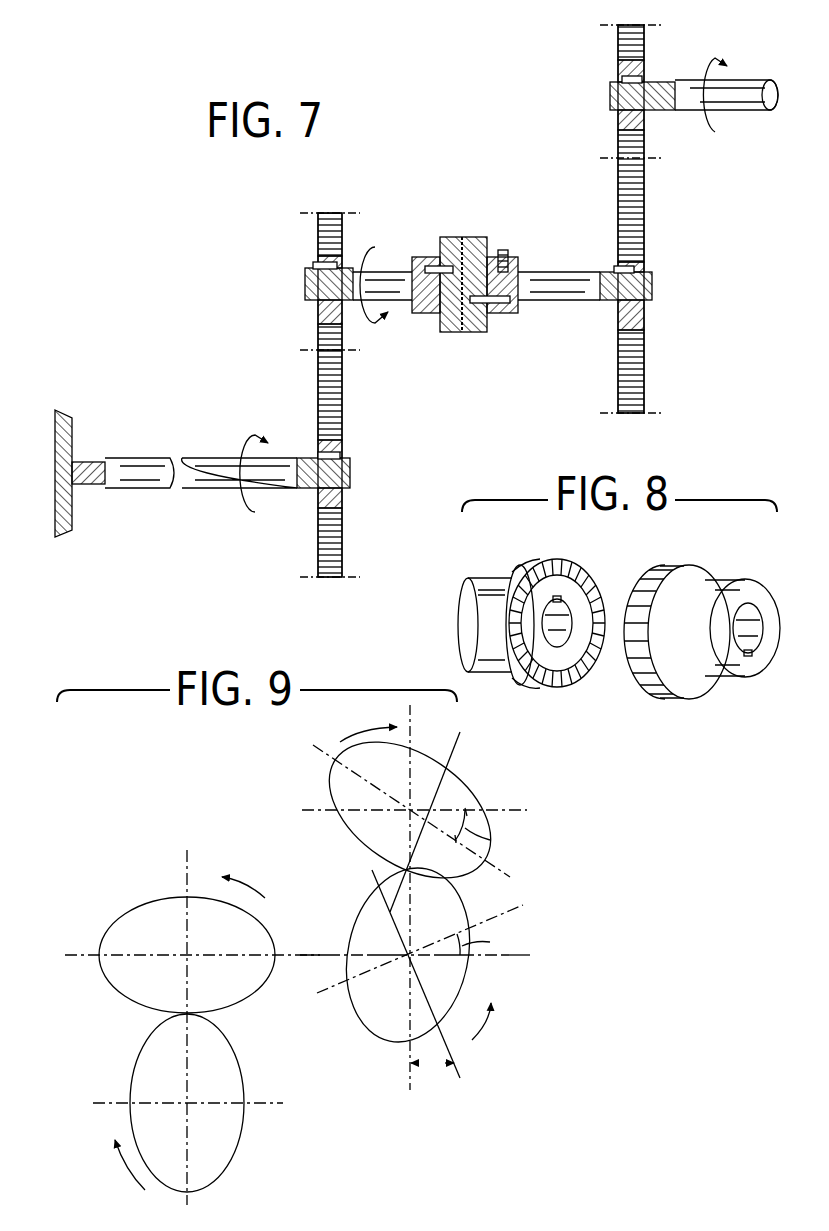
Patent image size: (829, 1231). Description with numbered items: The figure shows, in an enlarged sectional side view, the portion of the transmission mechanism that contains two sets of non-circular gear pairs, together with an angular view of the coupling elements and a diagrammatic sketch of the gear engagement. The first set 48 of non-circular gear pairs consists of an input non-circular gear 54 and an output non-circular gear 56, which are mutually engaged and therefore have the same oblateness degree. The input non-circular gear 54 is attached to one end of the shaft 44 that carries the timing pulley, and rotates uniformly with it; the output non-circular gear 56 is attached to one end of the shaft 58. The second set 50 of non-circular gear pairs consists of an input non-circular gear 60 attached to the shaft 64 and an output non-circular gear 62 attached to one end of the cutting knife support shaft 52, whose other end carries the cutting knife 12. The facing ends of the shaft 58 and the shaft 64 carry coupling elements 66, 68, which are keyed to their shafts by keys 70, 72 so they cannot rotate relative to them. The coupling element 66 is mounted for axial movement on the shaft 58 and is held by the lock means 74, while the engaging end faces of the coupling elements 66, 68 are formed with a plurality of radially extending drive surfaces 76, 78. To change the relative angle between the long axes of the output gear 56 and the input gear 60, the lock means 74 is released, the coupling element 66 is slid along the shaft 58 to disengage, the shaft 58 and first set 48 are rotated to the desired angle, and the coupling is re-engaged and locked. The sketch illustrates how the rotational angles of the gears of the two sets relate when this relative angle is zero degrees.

In FIG. 7, the cutting knife 12 is at (72, 440).
In FIG. 7, the shaft 44 is at (742, 96).
In FIG. 7, the first set of non-circular gear pairs 48 is at (610, 157).
In FIG. 9, the first set of non-circular gear pairs 48 is at (342, 854).
In FIG. 7, the second set of non-circular gear pairs 50 is at (362, 366).
In FIG. 9, the second set of non-circular gear pairs 50 is at (240, 1030).
In FIG. 7, the cutting knife support shaft 52 is at (216, 462).
In FIG. 7, the input non-circular gear 54 is at (618, 58).
In FIG. 9, the input non-circular gear 54 is at (460, 782).
In FIG. 7, the output non-circular gear 56 is at (644, 200).
In FIG. 9, the output non-circular gear 56 is at (372, 1005).
In FIG. 7, the shaft 58 is at (562, 300).
In FIG. 7, the input non-circular gear 60 is at (318, 236).
In FIG. 9, the input non-circular gear 60 is at (160, 918).
In FIG. 7, the output non-circular gear 62 is at (342, 548).
In FIG. 9, the output non-circular gear 62 is at (215, 1142).
In FIG. 7, the shaft 64 is at (380, 282).
In FIG. 7, the coupling element 66 is at (490, 250).
In FIG. 8, the coupling element 66 is at (675, 697).
In FIG. 7, the coupling element 68 is at (450, 237).
In FIG. 8, the coupling element 68 is at (512, 580).
In FIG. 7, the key 70 is at (505, 313).
In FIG. 7, the key 72 is at (432, 257).
In FIG. 7, the lock means 74 is at (508, 252).
In FIG. 8, the radially extending drive surfaces 76 is at (618, 600).
In FIG. 8, the radially extending drive surfaces 78 is at (572, 682).